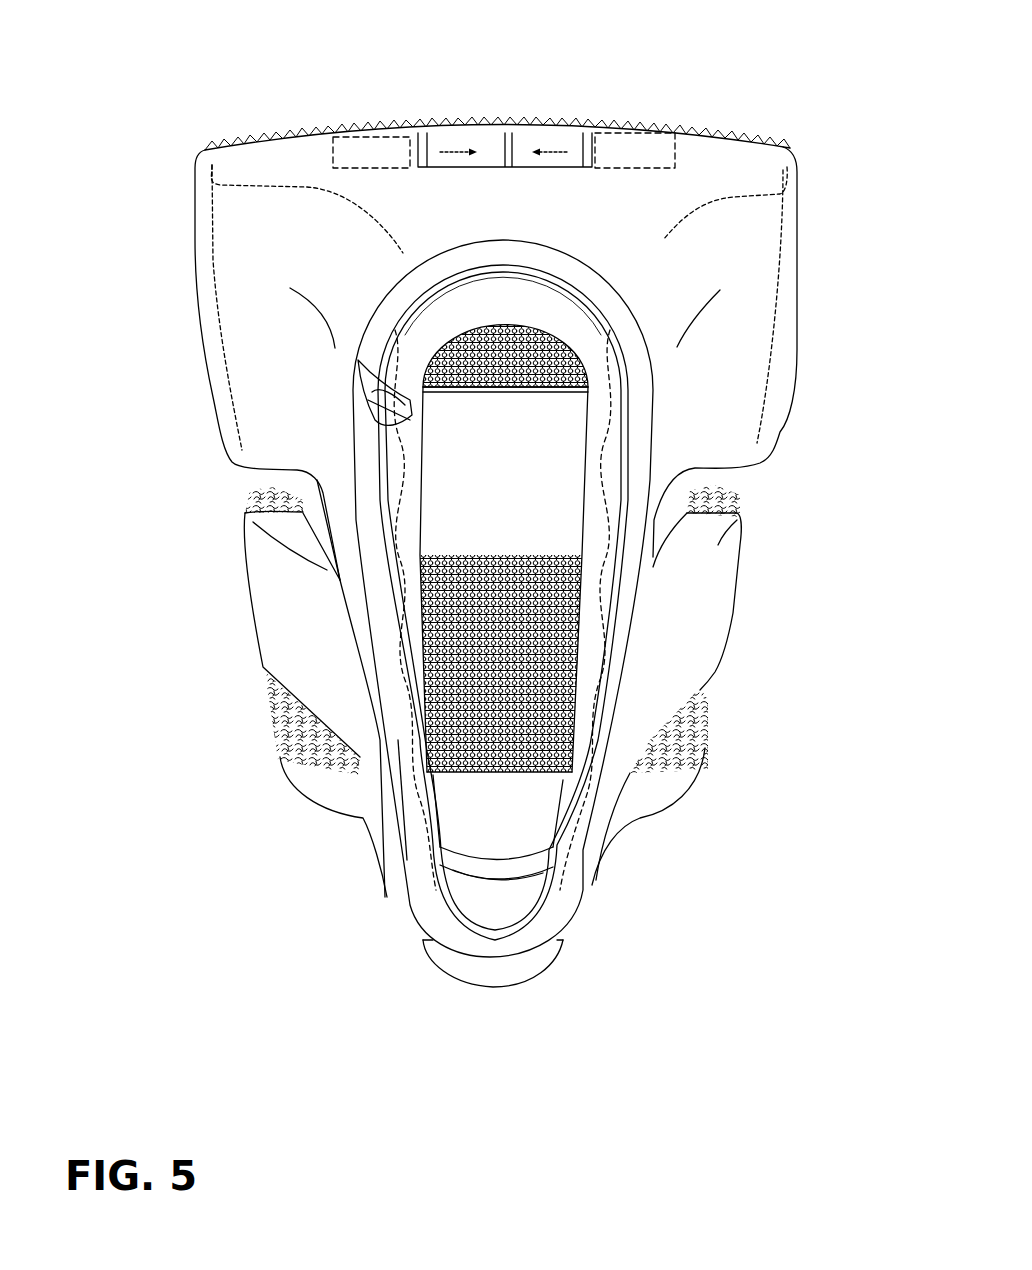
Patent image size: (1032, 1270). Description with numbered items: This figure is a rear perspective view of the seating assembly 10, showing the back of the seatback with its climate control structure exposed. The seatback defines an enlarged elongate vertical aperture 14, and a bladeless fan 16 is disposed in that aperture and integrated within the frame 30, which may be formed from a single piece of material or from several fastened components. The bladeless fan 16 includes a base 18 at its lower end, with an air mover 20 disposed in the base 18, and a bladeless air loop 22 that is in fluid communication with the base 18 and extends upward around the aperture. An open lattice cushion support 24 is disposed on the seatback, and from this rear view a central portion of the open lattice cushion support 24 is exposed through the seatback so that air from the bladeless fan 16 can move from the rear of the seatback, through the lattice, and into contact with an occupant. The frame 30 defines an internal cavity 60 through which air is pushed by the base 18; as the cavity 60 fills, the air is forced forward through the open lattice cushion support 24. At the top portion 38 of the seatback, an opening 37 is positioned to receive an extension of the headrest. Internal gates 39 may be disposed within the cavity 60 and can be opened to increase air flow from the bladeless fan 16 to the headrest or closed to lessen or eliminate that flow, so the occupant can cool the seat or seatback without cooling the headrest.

The seating assembly 10 is at (627, 80).
The elongate vertical aperture 14 is at (540, 607).
The bladeless fan 16 is at (600, 440).
The base 18 is at (472, 965).
The air mover 20 is at (520, 963).
The bladeless air loop 22 is at (393, 460).
The open lattice cushion support 24 is at (522, 657).
The frame 30 is at (727, 358).
The opening 37 is at (527, 140).
The top portion 38 is at (727, 173).
The internal gates 39 is at (370, 128).
The cavity 60 is at (720, 255).